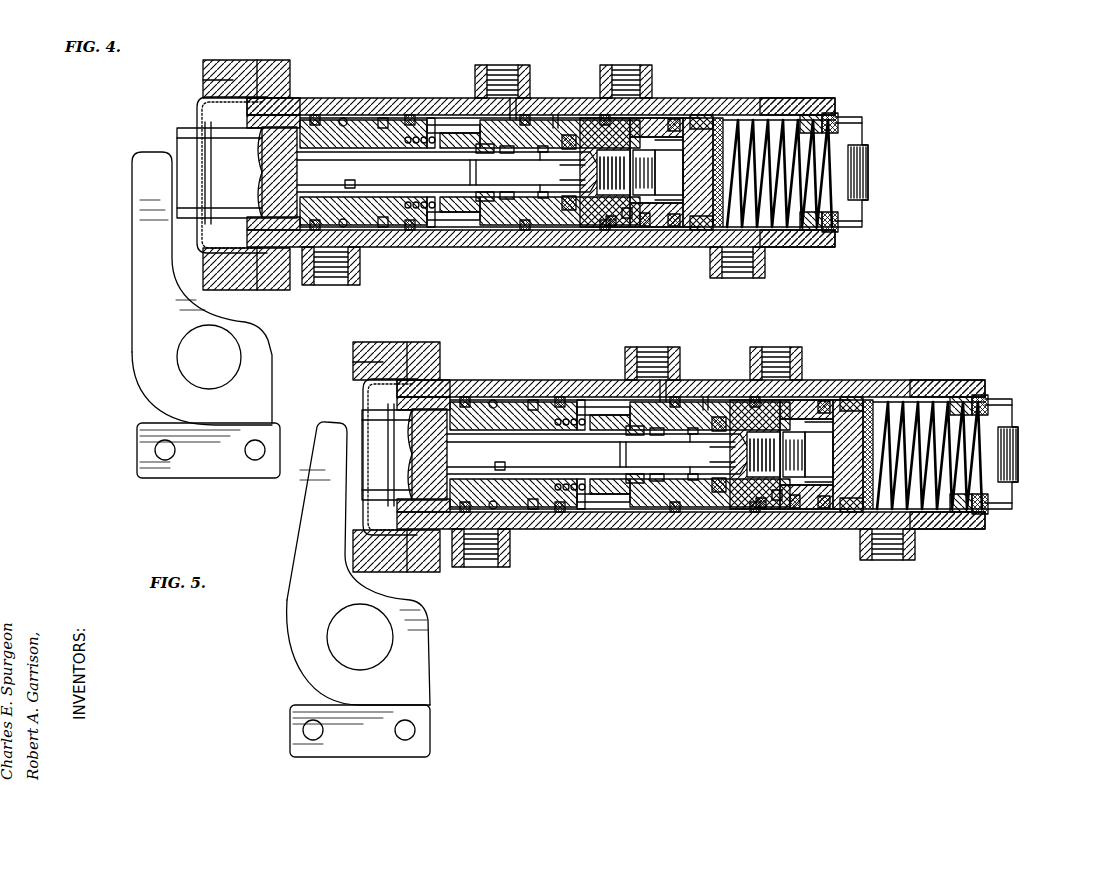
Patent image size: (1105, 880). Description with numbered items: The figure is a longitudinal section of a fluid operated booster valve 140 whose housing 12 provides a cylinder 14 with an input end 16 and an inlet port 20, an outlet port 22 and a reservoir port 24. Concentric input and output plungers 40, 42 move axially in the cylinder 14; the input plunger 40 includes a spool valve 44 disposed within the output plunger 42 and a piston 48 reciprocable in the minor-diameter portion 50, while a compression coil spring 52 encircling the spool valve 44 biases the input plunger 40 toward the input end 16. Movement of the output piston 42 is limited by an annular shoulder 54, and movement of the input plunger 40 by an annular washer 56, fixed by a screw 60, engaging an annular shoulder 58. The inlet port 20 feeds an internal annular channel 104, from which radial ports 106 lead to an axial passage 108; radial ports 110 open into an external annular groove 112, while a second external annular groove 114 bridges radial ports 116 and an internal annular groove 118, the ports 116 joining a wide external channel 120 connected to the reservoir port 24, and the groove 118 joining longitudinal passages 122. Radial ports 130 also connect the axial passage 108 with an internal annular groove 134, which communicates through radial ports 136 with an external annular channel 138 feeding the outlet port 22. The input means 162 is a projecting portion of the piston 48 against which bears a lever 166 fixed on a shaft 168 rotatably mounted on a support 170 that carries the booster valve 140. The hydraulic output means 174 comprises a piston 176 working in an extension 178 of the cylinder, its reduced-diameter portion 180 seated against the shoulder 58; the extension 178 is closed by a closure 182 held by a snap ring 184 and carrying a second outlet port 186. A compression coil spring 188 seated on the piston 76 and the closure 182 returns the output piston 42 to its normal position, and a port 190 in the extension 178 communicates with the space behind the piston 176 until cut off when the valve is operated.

In FIG. 4, the housing 12 is at (380, 96).
In FIG. 5, the housing 12 is at (691, 424).
In FIG. 4, the cylinder 14 is at (455, 100).
In FIG. 5, the cylinder 14 is at (620, 411).
In FIG. 4, the input end 16 is at (268, 97).
In FIG. 5, the input end 16 is at (437, 371).
In FIG. 4, the inlet port 20 is at (318, 288).
In FIG. 5, the inlet port 20 is at (481, 568).
In FIG. 4, the outlet port 22 is at (640, 68).
In FIG. 5, the outlet port 22 is at (780, 345).
In FIG. 4, the reservoir port 24 is at (540, 65).
In FIG. 5, the reservoir port 24 is at (662, 350).
In FIG. 4, the input plunger 40 is at (597, 203).
In FIG. 5, the input plunger 40 is at (755, 476).
In FIG. 4, the output plunger 42 is at (670, 230).
In FIG. 5, the output plunger 42 is at (829, 494).
In FIG. 4, the spool valve 44 is at (612, 228).
In FIG. 5, the spool valve 44 is at (779, 526).
In FIG. 4, the piston 48 is at (343, 118).
In FIG. 5, the piston 48 is at (515, 433).
In FIG. 4, the minor-diameter portion 50 is at (383, 118).
In FIG. 5, the minor-diameter portion 50 is at (546, 427).
In FIG. 4, the compression coil spring 52 is at (431, 125).
In FIG. 5, the compression coil spring 52 is at (590, 421).
In FIG. 4, the annular shoulder 54 is at (411, 116).
In FIG. 5, the annular shoulder 54 is at (568, 435).
In FIG. 4, the annular washer 56 is at (642, 226).
In FIG. 5, the annular washer 56 is at (815, 525).
In FIG. 4, the annular shoulder 58 is at (626, 218).
In FIG. 5, the annular shoulder 58 is at (790, 539).
In FIG. 4, the screw 60 is at (644, 175).
In FIG. 5, the screw 60 is at (817, 452).
In FIG. 4, the piston 76 is at (669, 170).
In FIG. 5, the piston 76 is at (826, 458).
In FIG. 4, the internal annular channel 104 is at (270, 285).
In FIG. 5, the internal annular channel 104 is at (400, 561).
In FIG. 4, the radial ports 106 is at (336, 118).
In FIG. 5, the radial ports 106 is at (438, 440).
In FIG. 4, the axial passage 108 is at (345, 184).
In FIG. 5, the axial passage 108 is at (500, 468).
In FIG. 4, the radial ports 110 is at (470, 158).
In FIG. 5, the radial ports 110 is at (599, 454).
In FIG. 4, the external annular groove 112 is at (470, 198).
In FIG. 5, the external annular groove 112 is at (657, 461).
In FIG. 5, the external annular groove 114 is at (713, 454).
In FIG. 4, the radial ports 116 is at (505, 153).
In FIG. 5, the radial ports 116 is at (679, 492).
In FIG. 4, the internal annular groove 118 is at (492, 203).
In FIG. 5, the internal annular groove 118 is at (649, 497).
In FIG. 4, the external channel 120 is at (512, 115).
In FIG. 5, the external channel 120 is at (690, 373).
In FIG. 4, the longitudinal passages 122 is at (445, 146).
In FIG. 5, the longitudinal passages 122 is at (594, 485).
In FIG. 4, the radial ports 130 is at (562, 192).
In FIG. 5, the radial ports 130 is at (722, 454).
In FIG. 4, the internal annular groove 134 is at (543, 152).
In FIG. 5, the internal annular groove 134 is at (725, 454).
In FIG. 4, the radial ports 136 is at (570, 135).
In FIG. 5, the radial ports 136 is at (733, 444).
In FIG. 4, the external annular channel 138 is at (555, 118).
In FIG. 5, the external annular channel 138 is at (705, 403).
In FIG. 4, the booster valve 140 is at (690, 80).
In FIG. 5, the booster valve 140 is at (821, 419).
In FIG. 4, the input means 162 is at (180, 187).
In FIG. 5, the input means 162 is at (365, 430).
In FIG. 4, the lever 166 is at (140, 285).
In FIG. 5, the lever 166 is at (300, 595).
In FIG. 4, the shaft 168 is at (195, 372).
In FIG. 5, the shaft 168 is at (343, 640).
In FIG. 4, the support 170 is at (280, 62).
In FIG. 5, the support 170 is at (350, 534).
In FIG. 4, the hydraulic output means 174 is at (760, 120).
In FIG. 5, the hydraulic output means 174 is at (929, 421).
In FIG. 4, the piston 176 is at (720, 120).
In FIG. 5, the piston 176 is at (892, 427).
In FIG. 4, the extension 178 is at (800, 100).
In FIG. 5, the extension 178 is at (958, 437).
In FIG. 4, the reduced-diameter portion 180 is at (692, 118).
In FIG. 5, the reduced-diameter portion 180 is at (860, 430).
In FIG. 4, the closure 182 is at (858, 120).
In FIG. 5, the closure 182 is at (1013, 451).
In FIG. 4, the snap ring 184 is at (835, 115).
In FIG. 5, the snap ring 184 is at (1002, 441).
In FIG. 4, the second outlet port 186 is at (868, 165).
In FIG. 5, the second outlet port 186 is at (1016, 481).
In FIG. 4, the compression coil spring 188 is at (825, 225).
In FIG. 5, the compression coil spring 188 is at (978, 476).
In FIG. 4, the port 190 is at (722, 272).
In FIG. 5, the port 190 is at (887, 559).